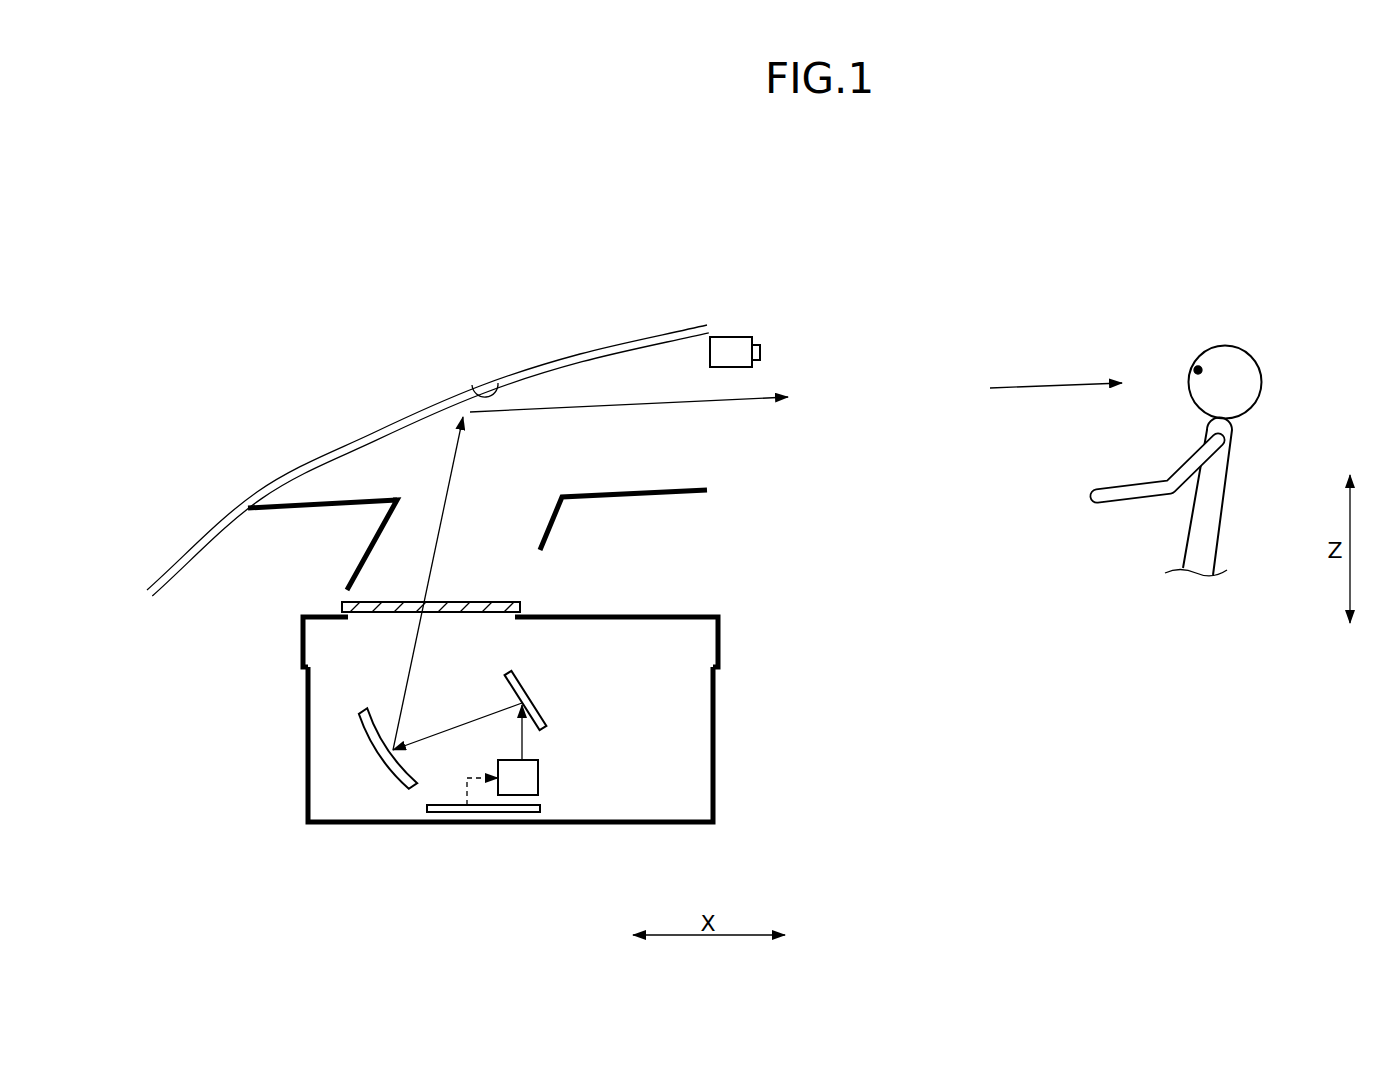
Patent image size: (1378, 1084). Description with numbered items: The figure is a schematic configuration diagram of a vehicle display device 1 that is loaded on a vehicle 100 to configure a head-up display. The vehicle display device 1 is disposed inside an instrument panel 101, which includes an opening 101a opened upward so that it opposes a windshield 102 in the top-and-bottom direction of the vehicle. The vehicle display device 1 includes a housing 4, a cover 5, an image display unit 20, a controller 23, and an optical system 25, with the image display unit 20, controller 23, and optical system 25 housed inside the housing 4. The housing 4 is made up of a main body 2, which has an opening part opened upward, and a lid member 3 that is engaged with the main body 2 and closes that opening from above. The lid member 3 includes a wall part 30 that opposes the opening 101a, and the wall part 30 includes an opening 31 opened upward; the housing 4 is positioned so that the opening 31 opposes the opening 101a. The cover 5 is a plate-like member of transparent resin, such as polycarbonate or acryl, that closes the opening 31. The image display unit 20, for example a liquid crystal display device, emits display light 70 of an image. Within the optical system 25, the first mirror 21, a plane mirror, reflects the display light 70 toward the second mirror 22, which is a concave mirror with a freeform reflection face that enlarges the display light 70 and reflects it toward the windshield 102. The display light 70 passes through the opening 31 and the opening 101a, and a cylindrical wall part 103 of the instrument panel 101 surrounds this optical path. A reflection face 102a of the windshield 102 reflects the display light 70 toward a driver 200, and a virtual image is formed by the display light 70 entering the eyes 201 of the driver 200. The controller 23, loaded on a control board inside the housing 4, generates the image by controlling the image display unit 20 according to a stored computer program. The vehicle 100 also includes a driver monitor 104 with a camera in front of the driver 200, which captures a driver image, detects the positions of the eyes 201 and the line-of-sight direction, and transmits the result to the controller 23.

The vehicle display device 1 is at (779, 606).
The main body 2 is at (307, 710).
The lid member 3 is at (303, 635).
The housing 4 is at (267, 672).
The cover 5 is at (340, 608).
The image display unit 20 is at (525, 783).
The first mirror 21 is at (540, 710).
The second mirror 22 is at (370, 737).
The controller 23 is at (482, 812).
The optical system 25 is at (393, 785).
The wall part 30 is at (671, 617).
The opening 31 is at (507, 597).
The display light 70 is at (450, 470).
The vehicle 100 is at (683, 237).
The instrument panel 101 is at (295, 503).
The opening 101a is at (398, 497).
The windshield 102 is at (617, 343).
The reflection face 102a is at (472, 385).
The wall part 103 is at (545, 527).
The driver monitor 104 is at (730, 337).
The driver 200 is at (1208, 333).
The eyes 201 is at (1198, 370).